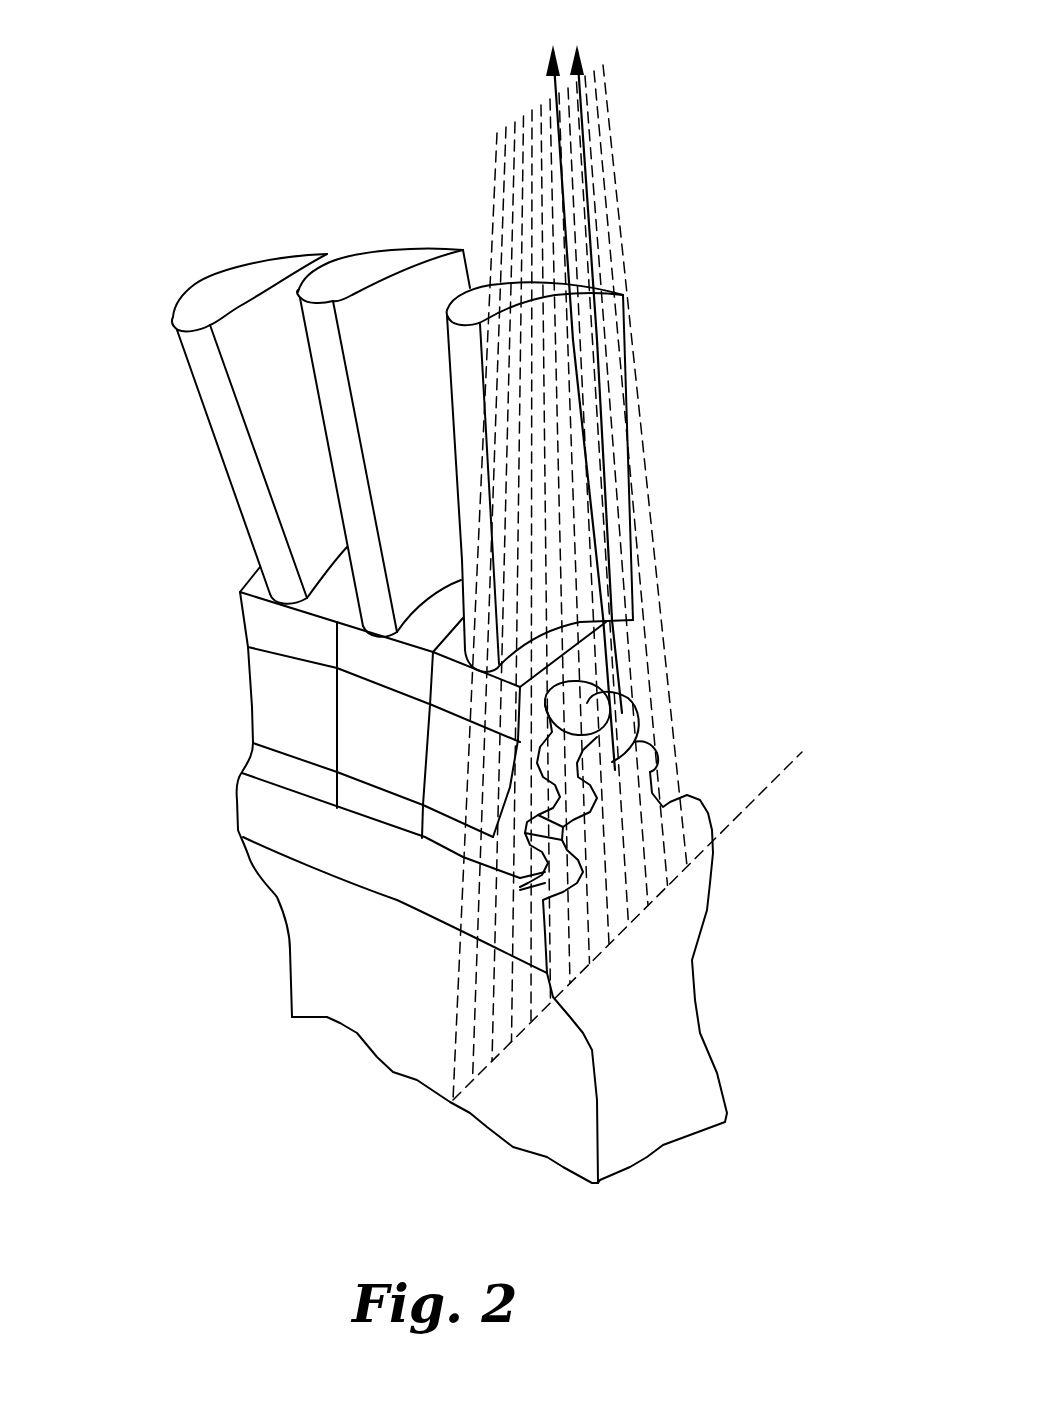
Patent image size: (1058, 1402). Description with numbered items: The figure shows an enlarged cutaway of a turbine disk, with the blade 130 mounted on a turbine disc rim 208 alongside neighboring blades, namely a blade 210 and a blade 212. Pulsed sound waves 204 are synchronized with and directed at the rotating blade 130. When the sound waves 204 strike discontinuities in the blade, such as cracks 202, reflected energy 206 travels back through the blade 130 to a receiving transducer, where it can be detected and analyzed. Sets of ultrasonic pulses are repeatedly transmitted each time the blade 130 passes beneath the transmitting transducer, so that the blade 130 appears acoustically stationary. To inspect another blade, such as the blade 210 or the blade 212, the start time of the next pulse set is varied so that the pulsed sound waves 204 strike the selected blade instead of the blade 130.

The blade 130 is at (475, 292).
The cracks 202 is at (638, 713).
The pulsed sound waves 204 is at (643, 322).
The reflected energy 206 is at (578, 52).
The turbine disc rim 208 is at (687, 903).
The blade 210 is at (381, 251).
The blade 212 is at (240, 262).